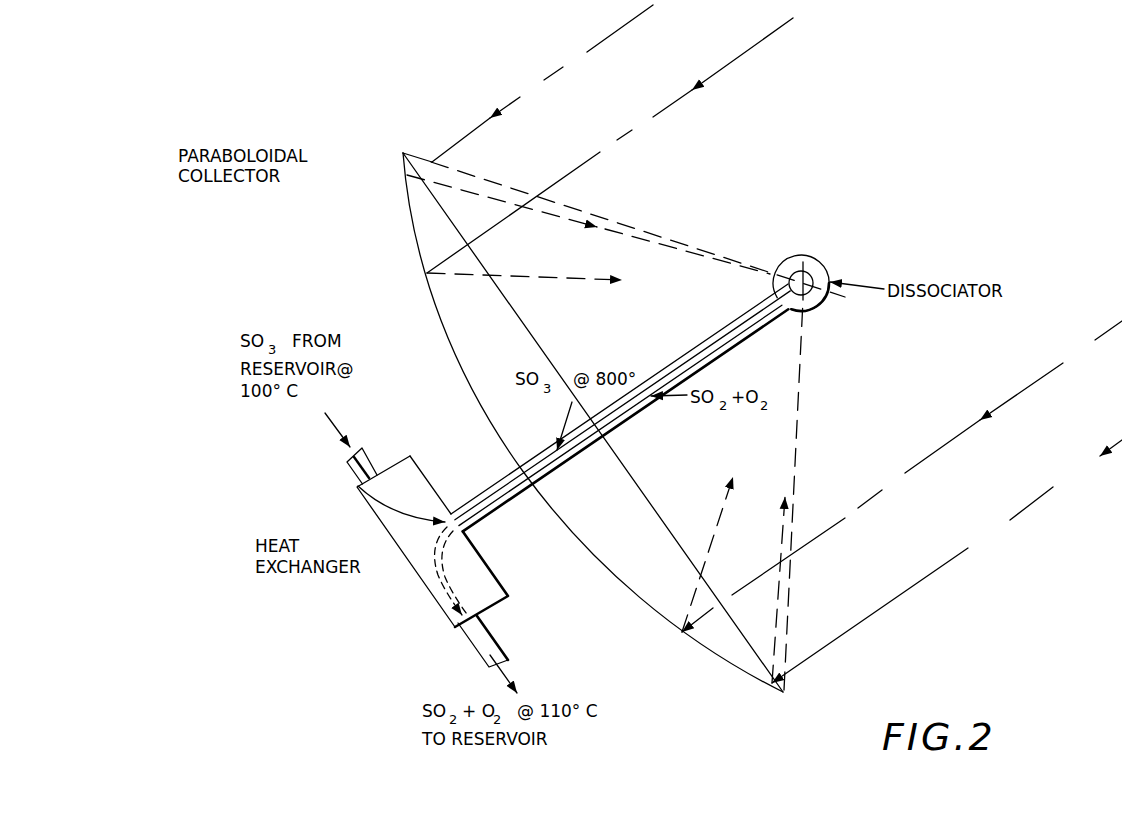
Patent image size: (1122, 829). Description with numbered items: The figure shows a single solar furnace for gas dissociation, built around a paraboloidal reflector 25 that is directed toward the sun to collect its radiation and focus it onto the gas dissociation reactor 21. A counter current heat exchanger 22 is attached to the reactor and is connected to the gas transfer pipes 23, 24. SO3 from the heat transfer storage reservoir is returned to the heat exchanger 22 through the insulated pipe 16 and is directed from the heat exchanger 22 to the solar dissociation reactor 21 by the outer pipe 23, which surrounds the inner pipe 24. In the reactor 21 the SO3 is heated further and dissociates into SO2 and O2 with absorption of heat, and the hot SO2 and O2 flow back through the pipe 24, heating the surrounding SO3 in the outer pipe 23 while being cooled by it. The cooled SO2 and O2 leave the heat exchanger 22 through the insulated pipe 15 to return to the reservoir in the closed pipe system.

The insulated pipe 15 is at (477, 645).
The insulated pipe 16 is at (368, 455).
The gas dissociation reactor 21 is at (828, 263).
The counter current heat exchanger 22 is at (426, 590).
The outer pipe 23 is at (501, 512).
The gas transfer pipe 24 is at (497, 489).
The paraboloidal reflector 25 is at (648, 605).